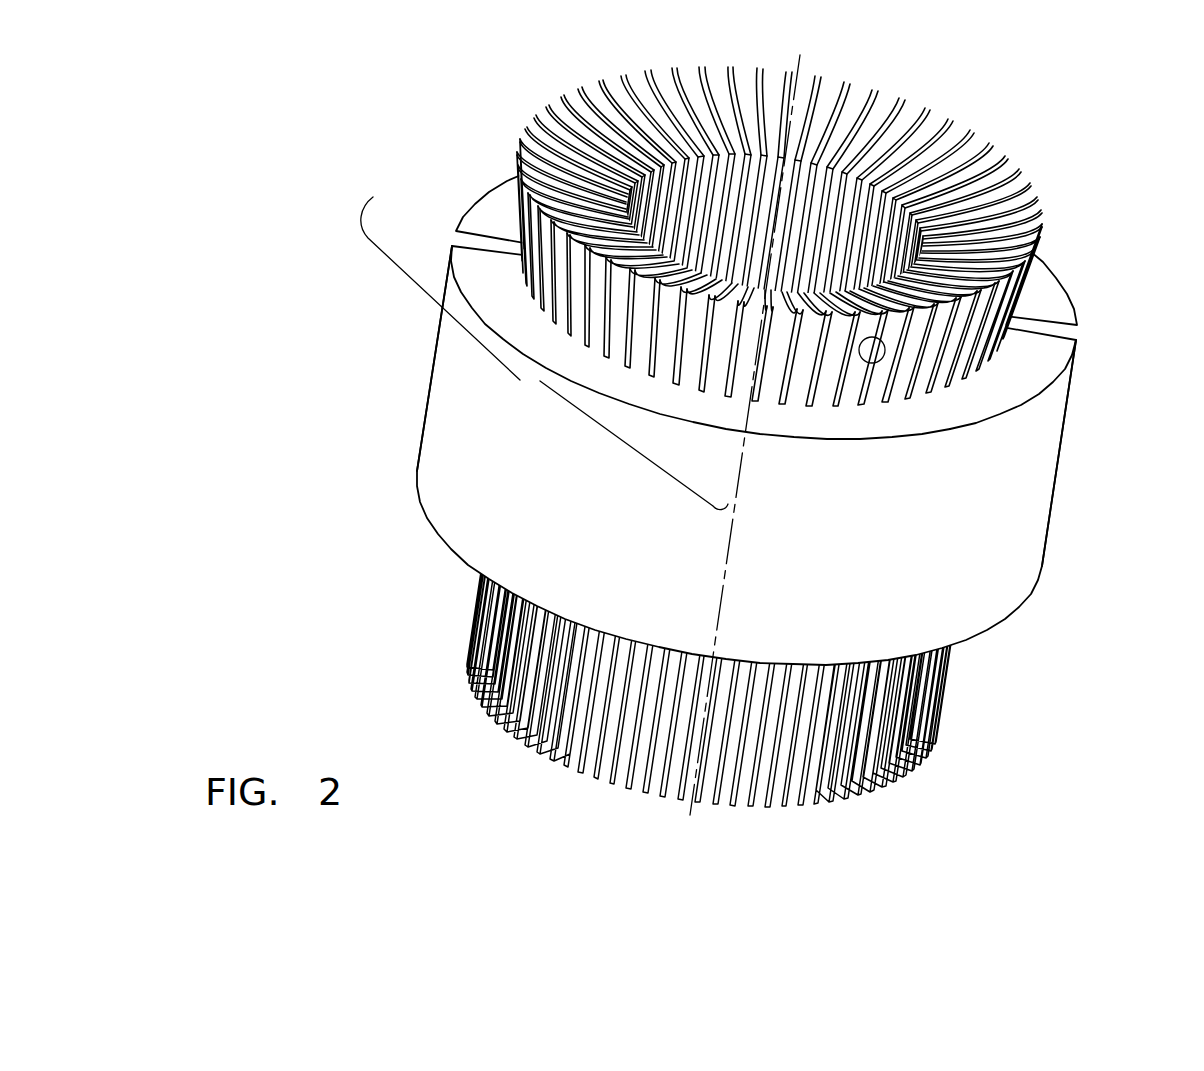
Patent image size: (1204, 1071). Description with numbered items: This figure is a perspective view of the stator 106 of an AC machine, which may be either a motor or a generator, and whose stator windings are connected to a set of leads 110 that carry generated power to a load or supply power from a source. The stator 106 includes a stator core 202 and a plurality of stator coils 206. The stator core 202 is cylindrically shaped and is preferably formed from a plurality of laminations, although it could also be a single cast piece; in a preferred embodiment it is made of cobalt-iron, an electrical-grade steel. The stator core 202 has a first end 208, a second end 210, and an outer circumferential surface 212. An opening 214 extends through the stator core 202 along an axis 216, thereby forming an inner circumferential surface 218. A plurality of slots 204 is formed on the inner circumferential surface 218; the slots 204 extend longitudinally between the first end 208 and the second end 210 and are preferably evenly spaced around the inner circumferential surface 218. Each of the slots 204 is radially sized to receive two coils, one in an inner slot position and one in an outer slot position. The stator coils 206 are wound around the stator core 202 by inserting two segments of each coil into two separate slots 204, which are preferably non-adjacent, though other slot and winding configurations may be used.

The stator 106 is at (412, 136).
The leads 110 is at (1058, 353).
The stator core 202 is at (490, 428).
The slots 204 is at (975, 362).
The stator coils 206 is at (520, 380).
The first end 208 is at (1047, 325).
The second end 210 is at (969, 622).
The outer circumferential surface 212 is at (1052, 447).
The opening 214 is at (868, 177).
The axis 216 is at (838, 62).
The inner circumferential surface 218 is at (885, 240).